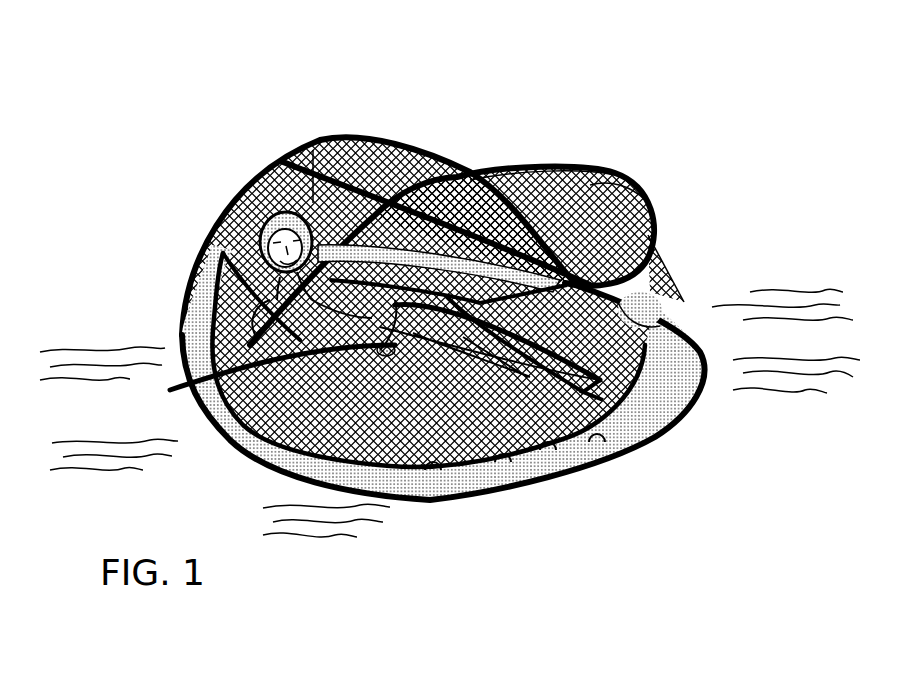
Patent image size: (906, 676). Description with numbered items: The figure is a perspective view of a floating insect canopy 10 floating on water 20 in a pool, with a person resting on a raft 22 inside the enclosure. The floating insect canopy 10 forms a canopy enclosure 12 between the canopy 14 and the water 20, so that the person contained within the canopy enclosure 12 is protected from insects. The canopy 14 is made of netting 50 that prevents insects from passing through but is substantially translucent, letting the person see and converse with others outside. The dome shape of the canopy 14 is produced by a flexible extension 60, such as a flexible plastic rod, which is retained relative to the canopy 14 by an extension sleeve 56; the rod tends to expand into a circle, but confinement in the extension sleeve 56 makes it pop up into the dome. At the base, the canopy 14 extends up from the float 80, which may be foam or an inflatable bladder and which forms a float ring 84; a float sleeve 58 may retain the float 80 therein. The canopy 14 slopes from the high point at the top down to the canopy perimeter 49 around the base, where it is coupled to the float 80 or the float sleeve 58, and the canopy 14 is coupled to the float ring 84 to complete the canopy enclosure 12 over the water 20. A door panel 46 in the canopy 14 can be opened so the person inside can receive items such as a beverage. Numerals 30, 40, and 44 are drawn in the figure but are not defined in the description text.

The floating insect canopy 10 is at (220, 120).
The canopy enclosure 12 is at (478, 165).
The canopy 14 is at (400, 140).
The water 20 is at (143, 443).
The raft 22 is at (630, 415).
The outer tube 30 is at (700, 395).
The pillow 40 is at (640, 330).
The backrest 44 is at (530, 168).
The door panel 46 is at (300, 140).
The canopy perimeter 49 is at (607, 440).
The netting 50 is at (603, 190).
The extension sleeve 56 is at (570, 168).
The float sleeve 58 is at (437, 470).
The flexible extension 60 is at (640, 193).
The float 80 is at (505, 460).
The float ring 84 is at (548, 450).